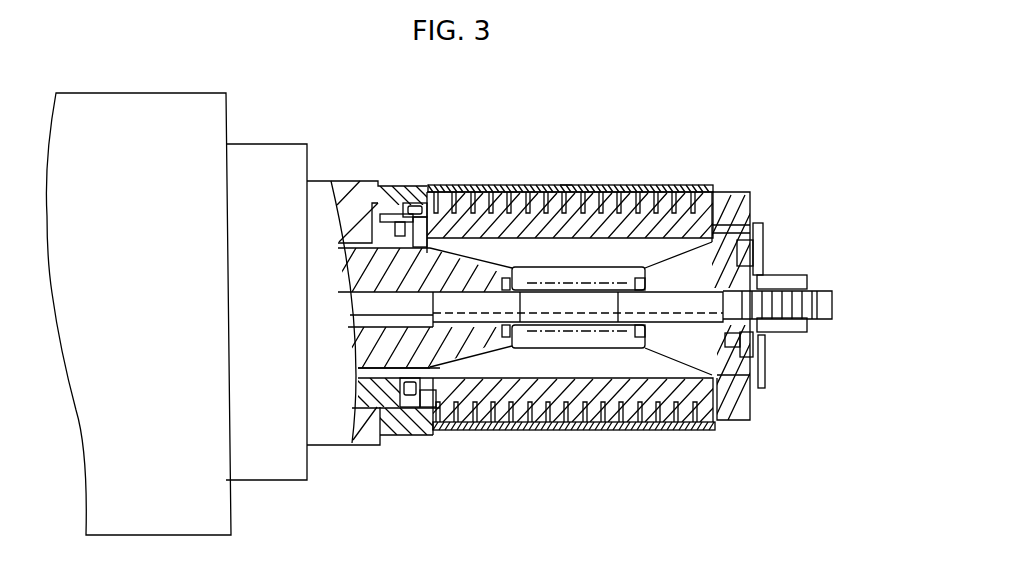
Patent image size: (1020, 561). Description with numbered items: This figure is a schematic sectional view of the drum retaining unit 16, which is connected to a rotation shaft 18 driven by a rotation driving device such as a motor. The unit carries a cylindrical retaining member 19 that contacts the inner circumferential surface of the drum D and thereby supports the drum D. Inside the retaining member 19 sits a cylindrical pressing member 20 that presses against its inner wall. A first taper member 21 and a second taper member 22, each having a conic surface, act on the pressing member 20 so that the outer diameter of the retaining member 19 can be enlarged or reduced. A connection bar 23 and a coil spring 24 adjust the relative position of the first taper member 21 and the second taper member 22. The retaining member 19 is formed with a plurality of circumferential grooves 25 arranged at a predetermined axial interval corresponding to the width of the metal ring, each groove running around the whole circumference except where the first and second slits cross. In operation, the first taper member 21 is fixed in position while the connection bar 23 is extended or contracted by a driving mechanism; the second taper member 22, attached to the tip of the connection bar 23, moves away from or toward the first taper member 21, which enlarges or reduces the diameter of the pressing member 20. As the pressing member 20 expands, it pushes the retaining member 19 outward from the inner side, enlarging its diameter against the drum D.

The drum retaining unit 16 is at (706, 131).
The rotation shaft 18 is at (352, 180).
The cylindrical retaining member 19 is at (465, 188).
The cylindrical pressing member 20 is at (600, 250).
The first taper member 21 is at (462, 424).
The second taper member 22 is at (690, 340).
The connection bar 23 is at (590, 303).
The coil spring 24 is at (624, 333).
The circumferential grooves 25 is at (541, 185).
The drum D is at (566, 185).